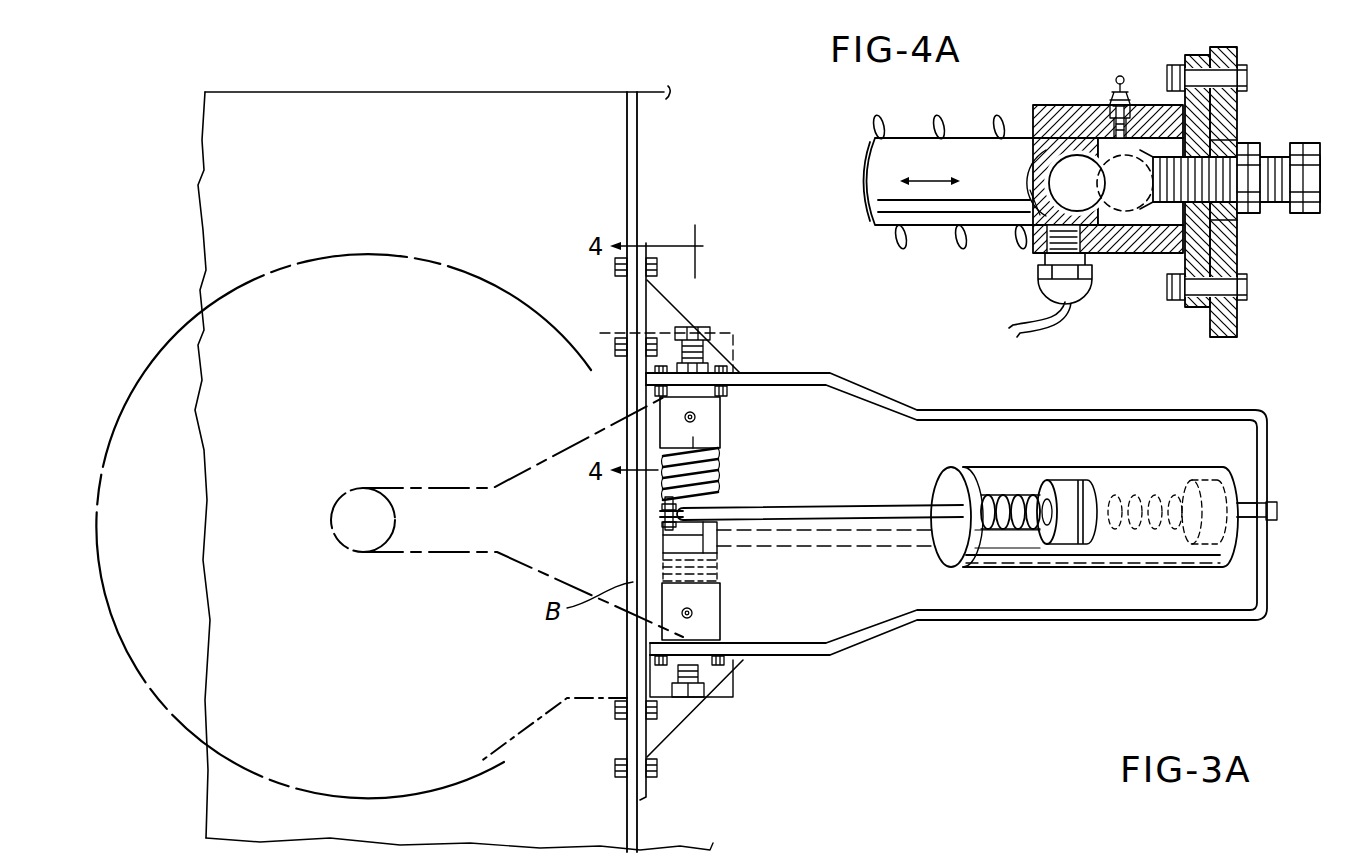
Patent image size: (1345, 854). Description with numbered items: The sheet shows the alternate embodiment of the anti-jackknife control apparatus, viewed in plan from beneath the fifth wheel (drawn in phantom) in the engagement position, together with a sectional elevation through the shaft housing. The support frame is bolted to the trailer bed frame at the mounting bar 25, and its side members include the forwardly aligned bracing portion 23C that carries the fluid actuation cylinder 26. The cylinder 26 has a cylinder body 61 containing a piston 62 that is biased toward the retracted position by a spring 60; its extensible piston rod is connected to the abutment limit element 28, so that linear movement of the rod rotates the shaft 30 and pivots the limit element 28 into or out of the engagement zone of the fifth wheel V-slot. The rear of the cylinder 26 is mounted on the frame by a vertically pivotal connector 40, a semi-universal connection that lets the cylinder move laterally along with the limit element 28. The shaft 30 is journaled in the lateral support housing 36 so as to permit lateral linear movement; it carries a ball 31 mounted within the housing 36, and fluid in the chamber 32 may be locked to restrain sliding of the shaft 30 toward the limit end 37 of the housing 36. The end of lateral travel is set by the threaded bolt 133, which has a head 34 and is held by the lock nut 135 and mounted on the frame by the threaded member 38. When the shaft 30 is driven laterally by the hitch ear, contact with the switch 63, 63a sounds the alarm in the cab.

In FIG. 3A, the forwardly aligned bracing portion 23C is at (808, 373).
In FIG. 3A, the mounting bar 25 is at (617, 763).
In FIG. 3A, the fluid actuation cylinder 26 is at (820, 505).
In FIG. 3A, the abutment limit element 28 is at (668, 503).
In FIG. 4A, the shaft 30 is at (873, 158).
In FIG. 4A, the ball 31 is at (1072, 162).
In FIG. 4A, the chamber 32 is at (1148, 190).
In FIG. 3A, the head 34 is at (692, 700).
In FIG. 4A, the head 34 is at (1305, 213).
In FIG. 4A, the lateral support housing 36 is at (1148, 118).
In FIG. 3A, the limit end 37 is at (733, 647).
In FIG. 4A, the limit end 37 is at (1200, 57).
In FIG. 4A, the threaded member 38 is at (1248, 79).
In FIG. 3A, the vertically pivotal connector 40 is at (1250, 497).
In FIG. 3A, the spring 60 is at (1002, 497).
In FIG. 3A, the cylinder 61 is at (943, 493).
In FIG. 3A, the piston 62 is at (1067, 483).
In FIG. 3A, the switch 63 is at (1010, 527).
In FIG. 4A, the switch 63a is at (1030, 202).
In FIG. 4A, the threaded bolt 133 is at (1232, 143).
In FIG. 4A, the lock nut 135 is at (1249, 214).